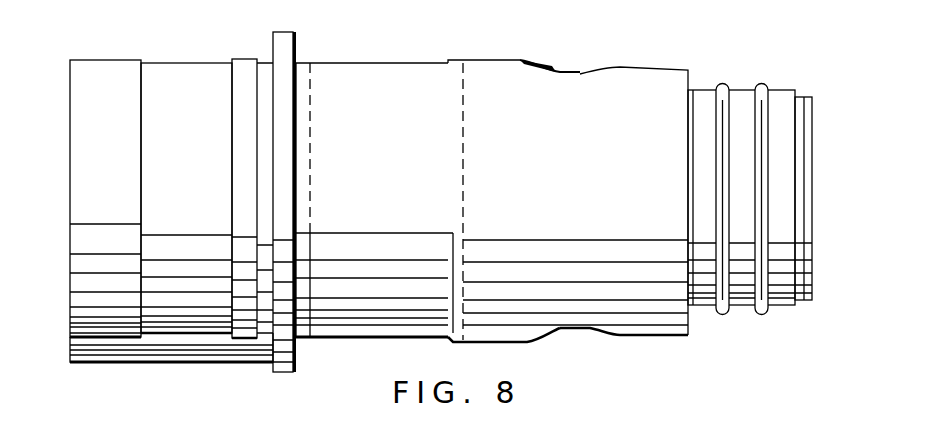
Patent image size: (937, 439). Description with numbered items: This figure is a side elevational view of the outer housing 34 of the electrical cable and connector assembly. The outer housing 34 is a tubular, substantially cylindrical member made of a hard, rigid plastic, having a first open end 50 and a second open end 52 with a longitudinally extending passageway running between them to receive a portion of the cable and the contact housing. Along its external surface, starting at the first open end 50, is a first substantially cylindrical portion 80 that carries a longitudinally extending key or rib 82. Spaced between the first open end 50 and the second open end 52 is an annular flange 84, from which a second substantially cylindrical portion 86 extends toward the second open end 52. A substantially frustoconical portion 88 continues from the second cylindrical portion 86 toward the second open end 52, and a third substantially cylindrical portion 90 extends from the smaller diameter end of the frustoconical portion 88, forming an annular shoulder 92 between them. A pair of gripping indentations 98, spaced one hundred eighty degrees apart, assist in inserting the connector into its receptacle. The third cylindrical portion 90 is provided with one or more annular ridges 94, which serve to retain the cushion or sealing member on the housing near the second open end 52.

The first open end 50 is at (58, 62).
The first substantially cylindrical portion 80 is at (185, 63).
The longitudinally extending key or rib 82 is at (165, 362).
The annular flange 84 is at (296, 122).
The second substantially cylindrical portion 86 is at (336, 63).
The outer housing 34 is at (420, 50).
The substantially frustoconical portion 88 is at (526, 60).
The gripping indentations 98 is at (590, 72).
The annular shoulder 92 is at (692, 90).
The third substantially cylindrical portion 90 is at (702, 90).
The annular ridges 94 is at (760, 311).
The second open end 52 is at (818, 94).